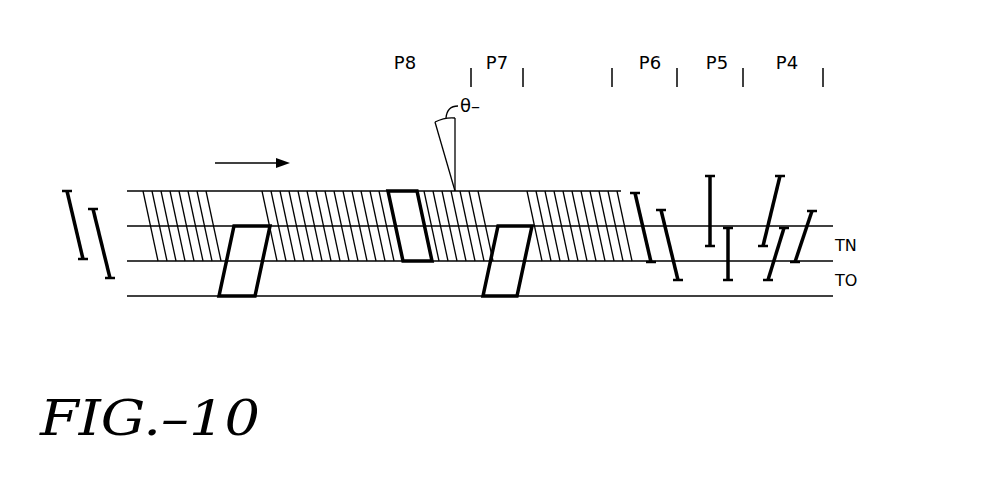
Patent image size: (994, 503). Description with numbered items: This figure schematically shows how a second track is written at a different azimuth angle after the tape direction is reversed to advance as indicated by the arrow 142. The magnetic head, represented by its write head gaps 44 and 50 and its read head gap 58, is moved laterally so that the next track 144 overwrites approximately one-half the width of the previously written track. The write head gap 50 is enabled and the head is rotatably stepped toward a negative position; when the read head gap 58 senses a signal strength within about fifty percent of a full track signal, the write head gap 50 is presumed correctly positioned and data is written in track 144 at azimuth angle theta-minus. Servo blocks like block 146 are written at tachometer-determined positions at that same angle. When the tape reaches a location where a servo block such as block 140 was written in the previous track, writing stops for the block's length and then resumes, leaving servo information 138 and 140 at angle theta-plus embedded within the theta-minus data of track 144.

The write head gap 44 is at (812, 208).
The write head gap 50 is at (636, 190).
The read head gap 58 is at (679, 282).
The servo information 138 is at (233, 297).
The servo block 140 is at (502, 297).
The arrow 142 is at (252, 154).
The next track 144 is at (347, 262).
The servo block 146 is at (400, 190).